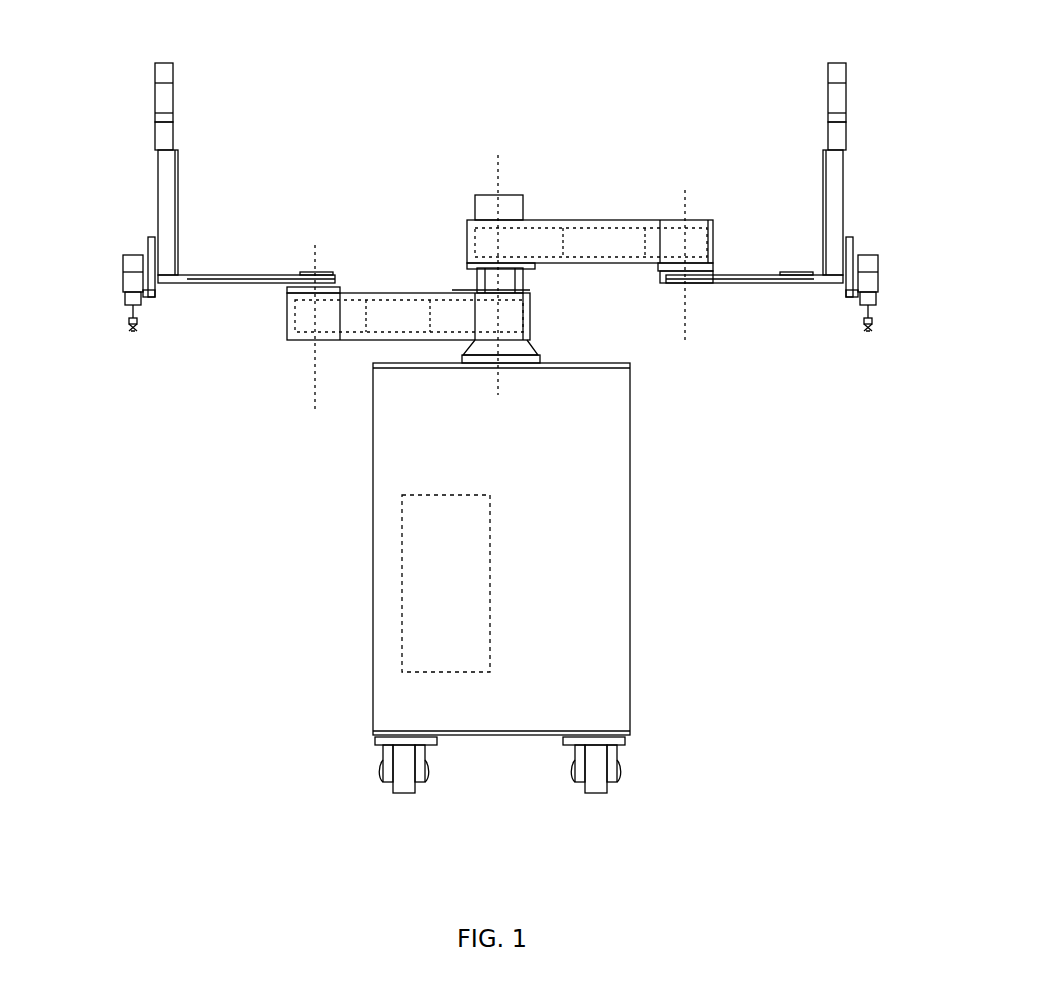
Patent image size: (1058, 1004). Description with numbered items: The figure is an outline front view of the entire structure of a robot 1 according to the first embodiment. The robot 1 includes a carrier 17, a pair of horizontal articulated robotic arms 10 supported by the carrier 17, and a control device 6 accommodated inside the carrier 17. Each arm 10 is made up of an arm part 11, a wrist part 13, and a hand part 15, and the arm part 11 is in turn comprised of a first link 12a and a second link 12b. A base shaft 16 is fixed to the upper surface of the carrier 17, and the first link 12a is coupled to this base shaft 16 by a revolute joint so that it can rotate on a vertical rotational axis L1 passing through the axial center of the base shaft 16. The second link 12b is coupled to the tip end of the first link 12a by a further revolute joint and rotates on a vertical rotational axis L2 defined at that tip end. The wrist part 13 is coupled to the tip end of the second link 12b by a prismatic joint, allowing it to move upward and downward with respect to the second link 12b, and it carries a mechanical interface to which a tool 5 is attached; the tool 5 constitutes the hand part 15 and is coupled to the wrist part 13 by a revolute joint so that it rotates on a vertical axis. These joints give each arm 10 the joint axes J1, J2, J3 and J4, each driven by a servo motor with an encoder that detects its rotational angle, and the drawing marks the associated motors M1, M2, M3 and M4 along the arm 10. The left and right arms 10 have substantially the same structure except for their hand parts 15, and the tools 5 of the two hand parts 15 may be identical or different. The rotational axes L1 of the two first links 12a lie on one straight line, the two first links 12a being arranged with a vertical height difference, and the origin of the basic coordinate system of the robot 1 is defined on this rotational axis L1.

The robot 1 is at (468, 102).
The tool 5 is at (131, 331).
The control device 6 is at (400, 586).
The arm 10 is at (268, 188).
The arm part 11 is at (305, 225).
The first link 12a is at (345, 340).
The second link 12b is at (222, 283).
The wrist part 13 is at (148, 242).
The hand part 15 is at (137, 332).
The base shaft 16 is at (528, 280).
The carrier 17 is at (632, 520).
The joint axis J1 is at (470, 218).
The joint axis J2 is at (287, 325).
The joint axis J3 is at (155, 165).
The joint axis J4 is at (131, 318).
The rotational axis L1 is at (498, 261).
The rotational axis L2 is at (498, 315).
The first motor M1 is at (430, 295).
The second motor M2 is at (366, 295).
The third motor M3 is at (155, 72).
The fourth motor M4 is at (123, 270).